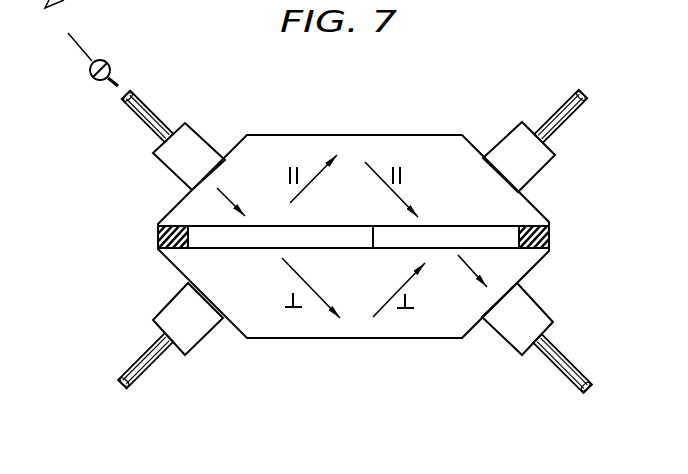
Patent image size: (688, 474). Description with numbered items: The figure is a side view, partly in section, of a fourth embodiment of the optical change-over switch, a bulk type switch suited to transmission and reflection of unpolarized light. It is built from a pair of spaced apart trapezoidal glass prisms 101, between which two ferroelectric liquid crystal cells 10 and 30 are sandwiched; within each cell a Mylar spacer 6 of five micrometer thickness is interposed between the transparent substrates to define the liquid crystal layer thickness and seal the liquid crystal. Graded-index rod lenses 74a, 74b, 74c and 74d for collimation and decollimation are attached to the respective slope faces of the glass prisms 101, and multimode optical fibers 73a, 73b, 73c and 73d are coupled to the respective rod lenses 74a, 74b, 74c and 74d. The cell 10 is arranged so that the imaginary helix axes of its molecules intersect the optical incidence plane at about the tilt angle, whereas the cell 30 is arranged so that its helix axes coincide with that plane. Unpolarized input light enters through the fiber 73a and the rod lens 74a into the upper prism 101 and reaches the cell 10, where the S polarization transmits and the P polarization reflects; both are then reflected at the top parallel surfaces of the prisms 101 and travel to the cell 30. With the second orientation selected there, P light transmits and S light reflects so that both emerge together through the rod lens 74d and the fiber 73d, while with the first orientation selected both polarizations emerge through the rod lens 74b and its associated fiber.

The trapezoidal glass prism 101 is at (263, 135).
The ferroelectric liquid crystal cell 10 is at (243, 248).
The ferroelectric liquid crystal cell 30 is at (445, 229).
The spacer 6 is at (550, 233).
The multimode optical fiber 73a is at (143, 117).
The multimode optical fiber 73b is at (553, 113).
The multimode optical fiber 73c is at (140, 357).
The multimode optical fiber 73d is at (567, 357).
The graded-index rod lens 74a is at (168, 160).
The graded-index rod lens 74b is at (508, 140).
The graded-index rod lens 74c is at (163, 312).
The graded-index rod lens 74d is at (535, 311).